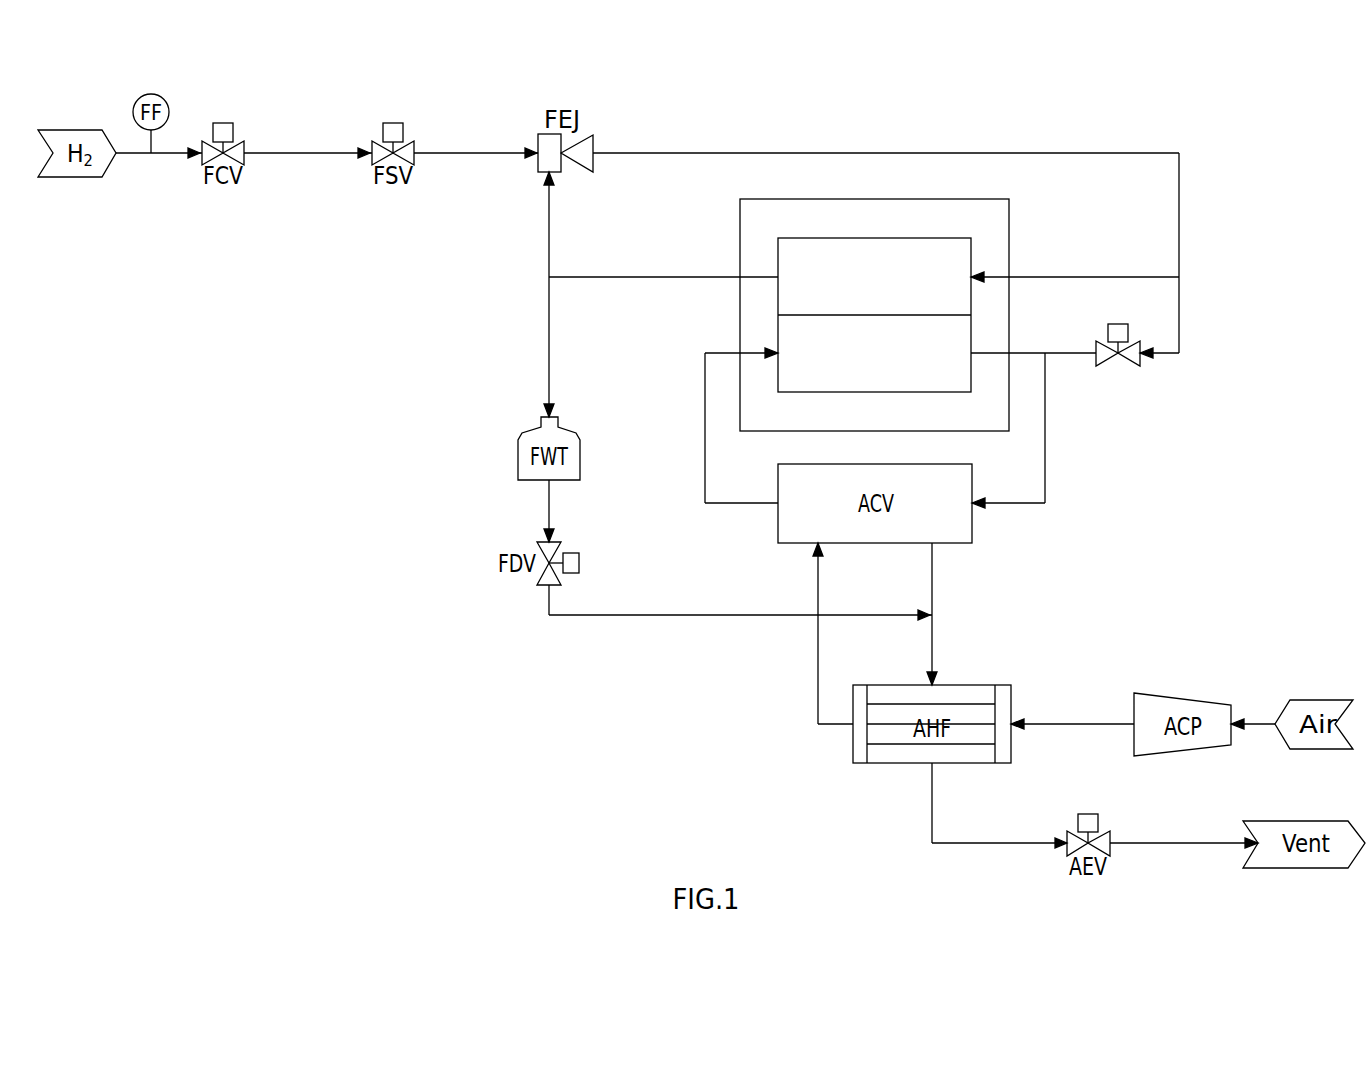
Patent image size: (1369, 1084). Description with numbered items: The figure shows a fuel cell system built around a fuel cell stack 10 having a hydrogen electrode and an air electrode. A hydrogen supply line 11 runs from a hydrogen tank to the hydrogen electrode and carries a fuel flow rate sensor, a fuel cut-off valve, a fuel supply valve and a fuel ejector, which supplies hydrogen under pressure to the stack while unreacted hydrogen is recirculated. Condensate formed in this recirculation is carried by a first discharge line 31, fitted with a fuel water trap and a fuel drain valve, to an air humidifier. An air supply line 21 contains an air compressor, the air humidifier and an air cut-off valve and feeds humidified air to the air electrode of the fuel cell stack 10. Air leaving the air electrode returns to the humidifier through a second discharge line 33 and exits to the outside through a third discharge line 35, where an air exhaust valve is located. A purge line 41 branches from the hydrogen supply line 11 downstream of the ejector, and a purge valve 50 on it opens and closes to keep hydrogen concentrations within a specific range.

The fuel cell stack 10 is at (874, 315).
The hydrogen supply line 11 is at (884, 153).
The air supply line 21 is at (818, 675).
The first discharge line 31 is at (549, 343).
The second discharge line 33 is at (1047, 490).
The third discharge line 35 is at (1175, 842).
The purge line 41 is at (1180, 305).
The purge valve 50 is at (1116, 390).